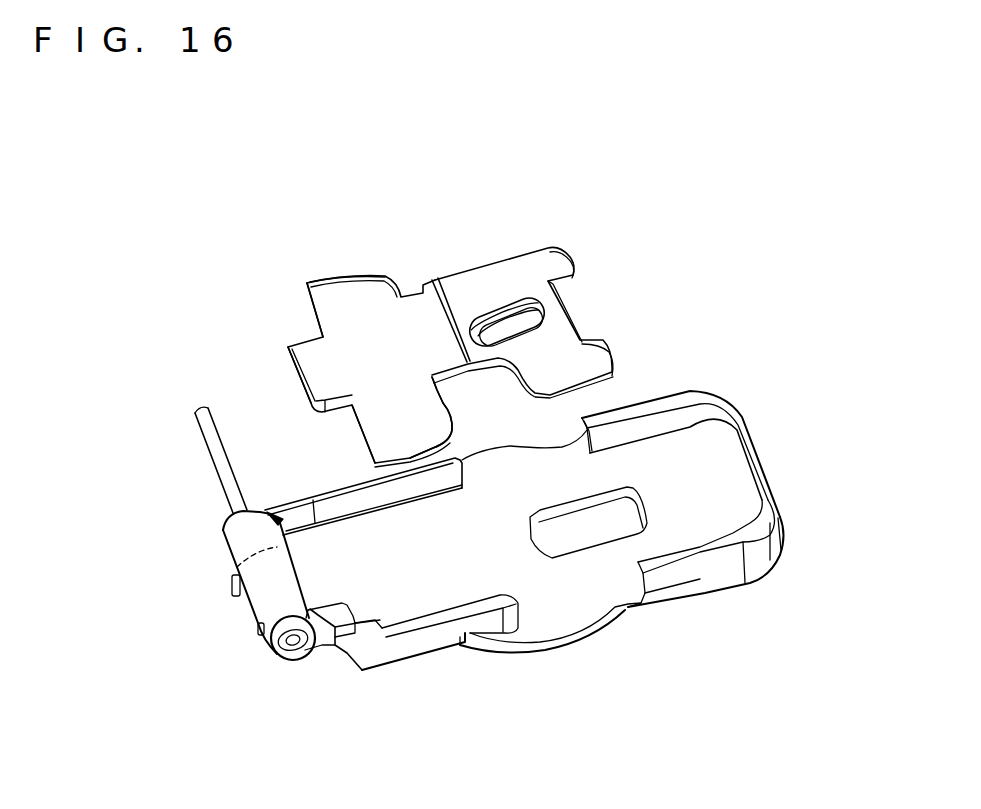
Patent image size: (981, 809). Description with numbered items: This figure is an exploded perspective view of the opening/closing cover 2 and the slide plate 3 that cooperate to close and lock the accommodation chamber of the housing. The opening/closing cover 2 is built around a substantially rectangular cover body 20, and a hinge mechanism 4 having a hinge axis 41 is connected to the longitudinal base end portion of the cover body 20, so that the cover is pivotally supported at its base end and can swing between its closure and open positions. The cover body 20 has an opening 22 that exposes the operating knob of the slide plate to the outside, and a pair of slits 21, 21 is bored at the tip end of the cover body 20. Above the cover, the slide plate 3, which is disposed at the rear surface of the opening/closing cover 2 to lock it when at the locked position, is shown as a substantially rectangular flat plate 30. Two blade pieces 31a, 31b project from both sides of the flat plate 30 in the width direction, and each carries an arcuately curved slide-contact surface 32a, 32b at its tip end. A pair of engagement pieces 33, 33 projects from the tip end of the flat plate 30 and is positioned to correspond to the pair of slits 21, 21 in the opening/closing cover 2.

The opening/closing cover 2 is at (370, 648).
The cover body 20 is at (413, 595).
The slits 21 is at (718, 425).
The opening 22 is at (577, 545).
The slide plate 3 is at (413, 327).
The flat plate 30 is at (340, 355).
The blade piece 31a is at (378, 432).
The blade piece 31b is at (327, 287).
The slide-contact surface 32a is at (440, 448).
The slide-contact surface 32b is at (353, 267).
The engagement pieces 33 is at (573, 263).
The hinge mechanism 4 is at (272, 598).
The hinge axis 41 is at (218, 452).